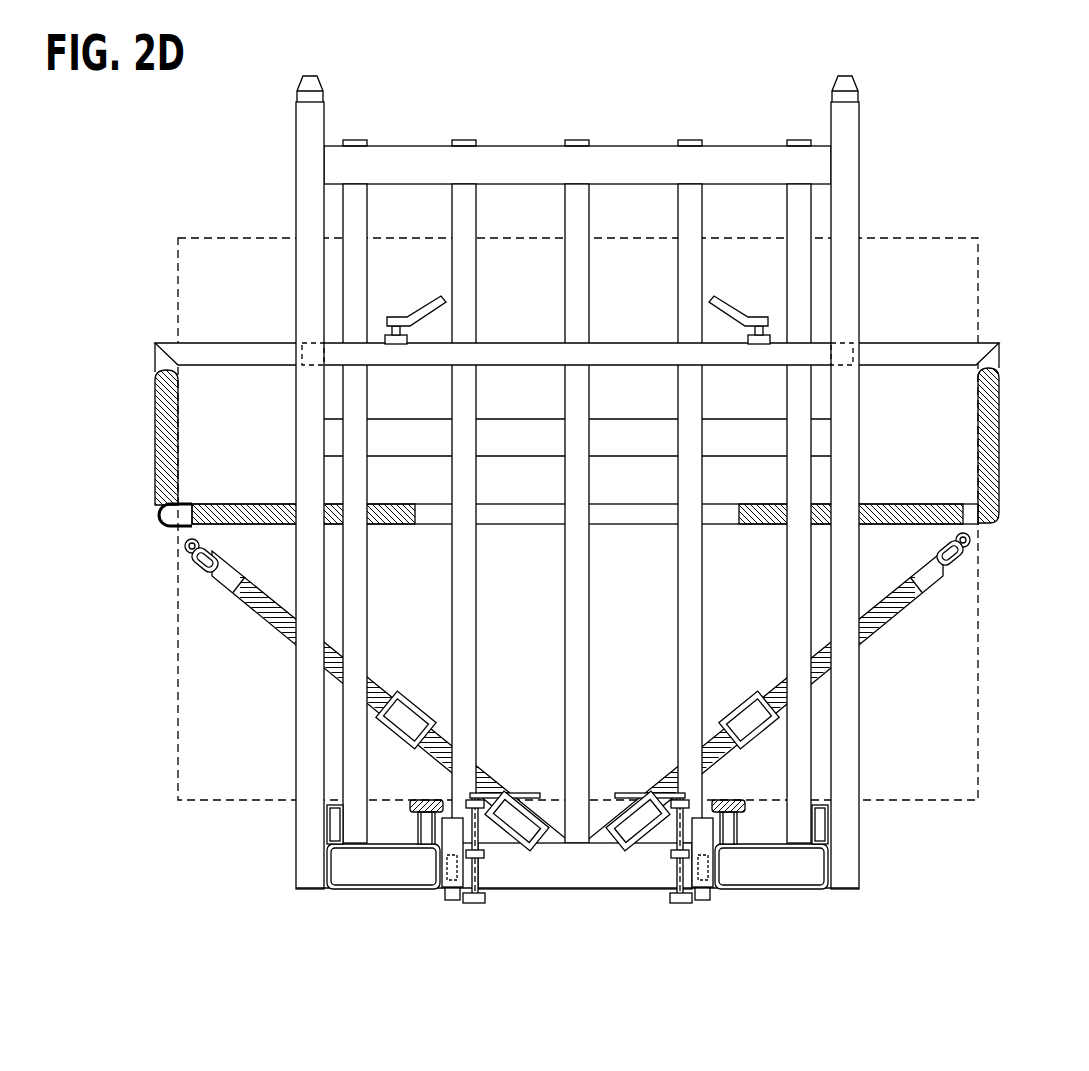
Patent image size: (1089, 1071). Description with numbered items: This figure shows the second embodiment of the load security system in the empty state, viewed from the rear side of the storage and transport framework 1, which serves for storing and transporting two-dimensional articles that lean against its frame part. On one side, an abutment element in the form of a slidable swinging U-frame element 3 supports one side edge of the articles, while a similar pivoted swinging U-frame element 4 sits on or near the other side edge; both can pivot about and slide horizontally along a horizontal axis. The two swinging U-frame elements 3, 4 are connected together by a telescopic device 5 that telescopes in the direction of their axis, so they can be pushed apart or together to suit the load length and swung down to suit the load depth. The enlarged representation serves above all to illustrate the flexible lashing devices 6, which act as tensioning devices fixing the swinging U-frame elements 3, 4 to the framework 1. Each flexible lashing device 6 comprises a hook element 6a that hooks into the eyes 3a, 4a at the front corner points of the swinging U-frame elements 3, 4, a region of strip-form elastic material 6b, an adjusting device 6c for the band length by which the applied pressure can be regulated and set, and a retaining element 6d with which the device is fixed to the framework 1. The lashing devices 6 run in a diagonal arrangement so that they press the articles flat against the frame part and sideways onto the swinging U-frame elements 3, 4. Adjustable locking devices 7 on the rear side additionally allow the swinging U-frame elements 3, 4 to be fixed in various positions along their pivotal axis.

The storage and transport framework 1 is at (632, 146).
The swinging U-frame element 3 is at (152, 441).
The eye 3a is at (178, 543).
The swinging U-frame element 4 is at (1003, 421).
The eye 4a is at (975, 538).
The telescopic device 5 is at (518, 526).
The flexible lashing device 6 is at (380, 689).
The hook element 6a is at (198, 573).
The region of strip-form elastic material 6b is at (880, 627).
The adjusting device for the band length 6c is at (404, 709).
The retaining element 6d is at (616, 800).
The adjustable locking device 7 is at (395, 325).